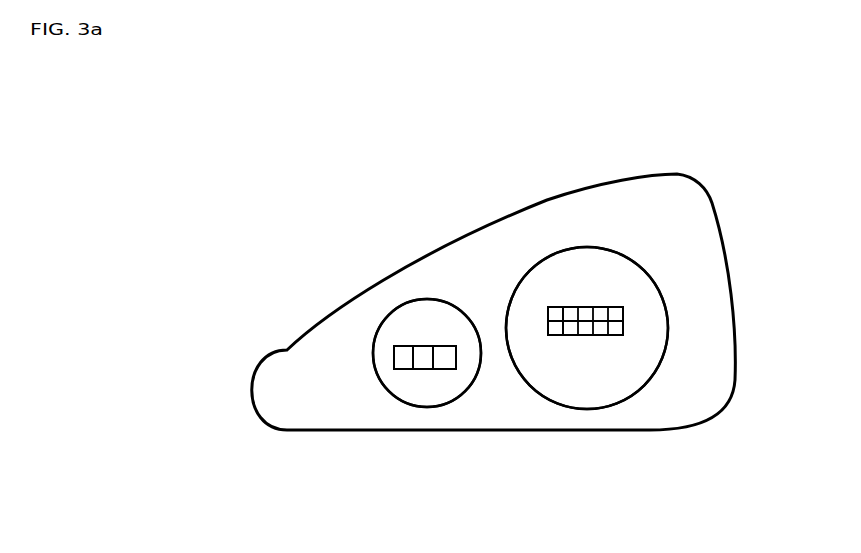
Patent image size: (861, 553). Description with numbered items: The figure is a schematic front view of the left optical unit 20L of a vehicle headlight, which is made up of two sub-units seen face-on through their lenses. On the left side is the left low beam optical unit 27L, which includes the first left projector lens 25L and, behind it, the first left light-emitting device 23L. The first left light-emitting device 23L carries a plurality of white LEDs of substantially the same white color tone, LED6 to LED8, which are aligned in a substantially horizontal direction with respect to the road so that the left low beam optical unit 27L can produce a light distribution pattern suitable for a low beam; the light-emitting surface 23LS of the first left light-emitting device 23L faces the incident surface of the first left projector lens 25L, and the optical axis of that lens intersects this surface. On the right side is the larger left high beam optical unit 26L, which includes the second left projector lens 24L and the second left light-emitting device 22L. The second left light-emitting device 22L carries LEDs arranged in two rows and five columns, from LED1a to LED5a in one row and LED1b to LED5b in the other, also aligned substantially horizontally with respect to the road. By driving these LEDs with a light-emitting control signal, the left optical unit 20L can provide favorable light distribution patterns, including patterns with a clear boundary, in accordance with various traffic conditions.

The left optical unit 20L is at (720, 190).
The second left light-emitting device 22L is at (623, 327).
The first left light-emitting device 23L is at (392, 355).
The light-emitting surface 23LS is at (422, 353).
The second left projector lens 24L is at (600, 409).
The first left projector lens 25L is at (437, 407).
The left high beam optical unit 26L is at (606, 246).
The left low beam optical unit 27L is at (443, 295).
The LED LED1a is at (615, 335).
The LED LED1b is at (613, 314).
The LED LED5a is at (553, 335).
The LED LED5b is at (556, 312).
The white LED LED6 is at (447, 353).
The white LED LED8 is at (403, 353).